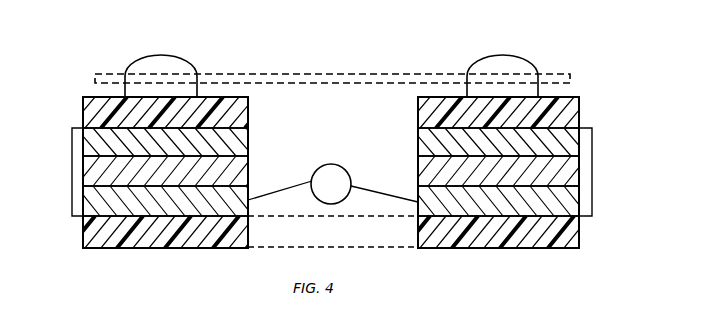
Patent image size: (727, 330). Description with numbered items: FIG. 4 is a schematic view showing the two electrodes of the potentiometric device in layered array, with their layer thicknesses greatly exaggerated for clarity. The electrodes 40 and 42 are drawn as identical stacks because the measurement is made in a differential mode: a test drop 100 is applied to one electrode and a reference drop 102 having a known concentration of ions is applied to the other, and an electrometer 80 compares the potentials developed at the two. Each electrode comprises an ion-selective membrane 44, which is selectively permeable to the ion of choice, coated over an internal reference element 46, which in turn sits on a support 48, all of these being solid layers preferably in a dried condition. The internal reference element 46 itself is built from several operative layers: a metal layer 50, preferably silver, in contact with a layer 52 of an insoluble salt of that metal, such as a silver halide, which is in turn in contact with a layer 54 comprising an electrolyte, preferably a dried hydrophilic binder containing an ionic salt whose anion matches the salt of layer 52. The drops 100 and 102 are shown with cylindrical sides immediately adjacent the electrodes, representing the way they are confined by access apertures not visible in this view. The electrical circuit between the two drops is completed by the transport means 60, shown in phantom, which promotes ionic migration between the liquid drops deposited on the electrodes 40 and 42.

The solid substrate 40 is at (82, 84).
The solid substrate 42 is at (586, 92).
The ion-selective membrane 44 is at (250, 108).
The internal reference element 46 is at (72, 173).
The support 48 is at (250, 228).
The metal layer 50 is at (250, 207).
The insoluble salt layer 52 is at (250, 165).
The electrolyte layer 54 is at (250, 133).
The transport means 60 is at (335, 73).
The electrometer 80 is at (334, 165).
The test drop 100 is at (153, 55).
The reference drop 102 is at (508, 58).